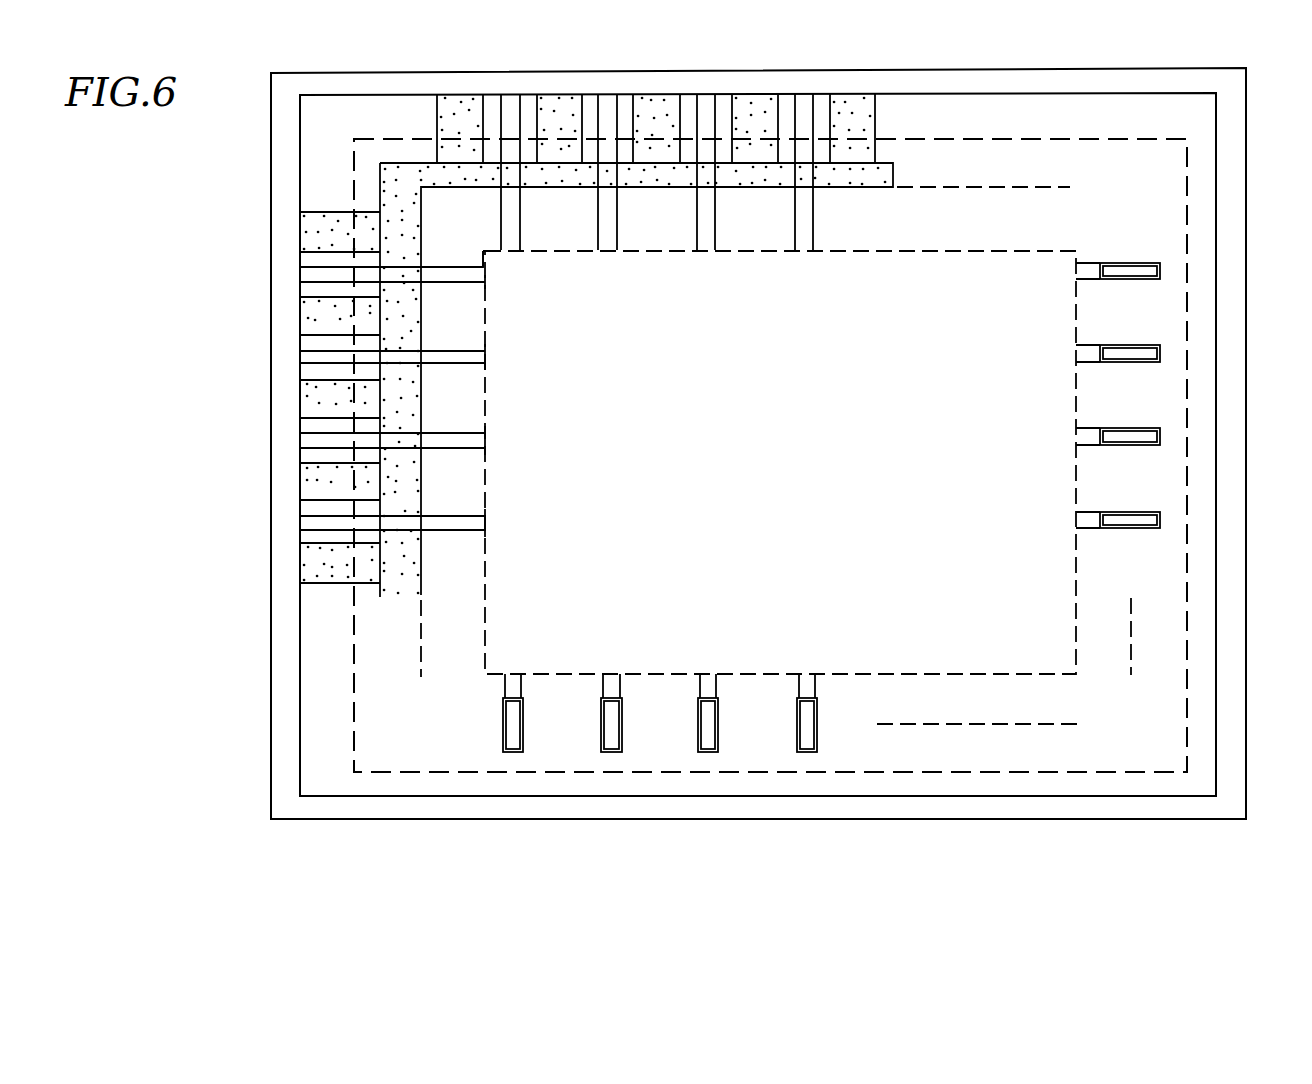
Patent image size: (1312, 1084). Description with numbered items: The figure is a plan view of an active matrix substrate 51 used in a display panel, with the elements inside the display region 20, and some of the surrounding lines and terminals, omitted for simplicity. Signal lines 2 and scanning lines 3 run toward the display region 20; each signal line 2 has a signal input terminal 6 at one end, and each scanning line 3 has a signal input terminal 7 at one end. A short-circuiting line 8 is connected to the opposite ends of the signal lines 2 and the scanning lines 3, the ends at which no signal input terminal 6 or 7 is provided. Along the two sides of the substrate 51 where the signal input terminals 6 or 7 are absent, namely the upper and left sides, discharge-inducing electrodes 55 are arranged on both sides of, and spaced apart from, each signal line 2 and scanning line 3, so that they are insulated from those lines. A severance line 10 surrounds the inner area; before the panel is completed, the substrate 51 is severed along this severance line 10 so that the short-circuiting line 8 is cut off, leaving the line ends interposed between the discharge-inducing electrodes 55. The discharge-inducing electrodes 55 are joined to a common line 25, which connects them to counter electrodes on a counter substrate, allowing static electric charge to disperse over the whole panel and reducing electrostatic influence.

The signal line 2 is at (455, 265).
The scanning line 3 is at (813, 225).
The signal input terminal 6 is at (1140, 262).
The signal input terminal 7 is at (795, 725).
The short-circuiting line 8 is at (1237, 133).
The severance line 10 is at (1188, 680).
The display region 20 is at (1077, 555).
The common line 25 is at (412, 170).
The active matrix substrate 51 is at (252, 600).
The discharge-inducing electrode 55 is at (852, 103).